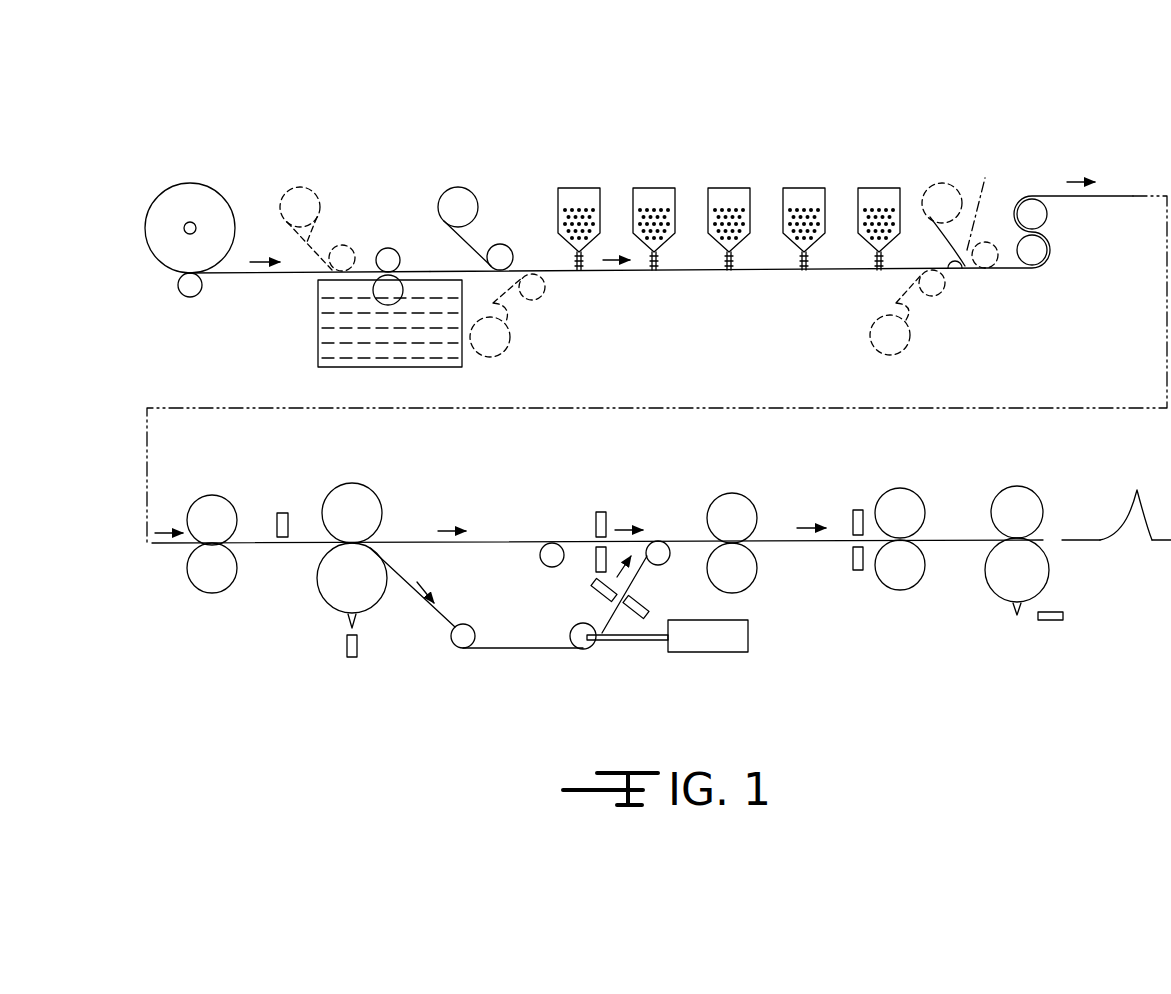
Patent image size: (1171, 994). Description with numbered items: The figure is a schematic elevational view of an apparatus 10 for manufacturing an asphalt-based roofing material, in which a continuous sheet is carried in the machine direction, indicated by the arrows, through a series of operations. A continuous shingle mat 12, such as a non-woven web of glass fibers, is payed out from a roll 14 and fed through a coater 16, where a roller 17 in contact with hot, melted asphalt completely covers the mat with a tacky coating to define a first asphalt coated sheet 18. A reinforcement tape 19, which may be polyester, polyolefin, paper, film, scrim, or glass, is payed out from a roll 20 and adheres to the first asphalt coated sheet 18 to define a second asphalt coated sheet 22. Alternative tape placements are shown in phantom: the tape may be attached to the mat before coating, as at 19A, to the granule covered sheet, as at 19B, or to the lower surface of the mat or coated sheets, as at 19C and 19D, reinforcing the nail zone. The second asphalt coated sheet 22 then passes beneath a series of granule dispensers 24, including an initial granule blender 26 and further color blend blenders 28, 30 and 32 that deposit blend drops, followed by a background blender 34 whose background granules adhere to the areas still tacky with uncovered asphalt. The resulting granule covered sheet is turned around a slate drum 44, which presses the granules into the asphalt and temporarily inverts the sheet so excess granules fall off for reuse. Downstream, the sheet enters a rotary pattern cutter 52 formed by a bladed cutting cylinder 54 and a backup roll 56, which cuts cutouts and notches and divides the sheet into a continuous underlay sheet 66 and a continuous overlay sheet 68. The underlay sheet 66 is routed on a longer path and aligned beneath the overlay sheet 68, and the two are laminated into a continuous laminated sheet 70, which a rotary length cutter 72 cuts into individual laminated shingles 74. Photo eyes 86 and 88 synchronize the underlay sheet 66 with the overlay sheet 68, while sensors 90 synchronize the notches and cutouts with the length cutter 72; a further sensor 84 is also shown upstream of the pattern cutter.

The apparatus 10 is at (365, 158).
The shingle mat 12 is at (245, 274).
The roll 14 is at (220, 196).
The coater 16 is at (318, 328).
The roller 17 is at (373, 287).
The first asphalt coated sheet 18 is at (350, 257).
The reinforcement tape 19 is at (473, 247).
The reinforcement tape 19A is at (322, 210).
The reinforcement tape 19B is at (985, 178).
The reinforcement tape 19C is at (512, 330).
The reinforcement tape 19D is at (912, 330).
The roll 20 is at (460, 187).
The second asphalt coated sheet 22 is at (557, 264).
The series of granule dispensers 24 is at (641, 141).
The initial granule blender 26 is at (558, 203).
The color blend blender 28 is at (633, 203).
The color blend blender 30 is at (708, 203).
The color blend blender 32 is at (783, 203).
The background blender 34 is at (858, 203).
The slate drum 44 is at (1047, 230).
The rotary pattern cutter 52 is at (348, 546).
The bladed cutting cylinder 54 is at (318, 580).
The backup roll 56 is at (372, 487).
The continuous underlay sheet 66 is at (527, 648).
The continuous overlay sheet 68 is at (497, 542).
The continuous laminated sheet 70 is at (682, 541).
The rotary length cutter 72 is at (990, 587).
The laminated shingles 74 is at (1126, 500).
The sensor 84 is at (283, 512).
The photo eye 86 is at (597, 512).
The photo eye 88 is at (640, 606).
The sensors 90 is at (853, 520).